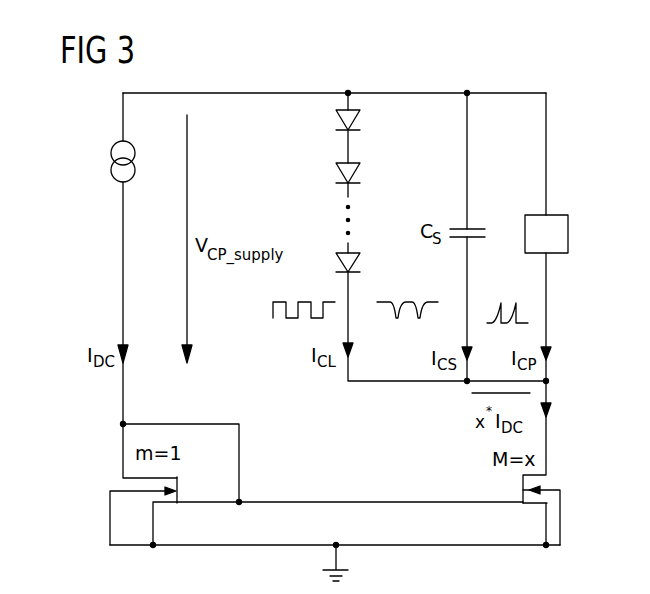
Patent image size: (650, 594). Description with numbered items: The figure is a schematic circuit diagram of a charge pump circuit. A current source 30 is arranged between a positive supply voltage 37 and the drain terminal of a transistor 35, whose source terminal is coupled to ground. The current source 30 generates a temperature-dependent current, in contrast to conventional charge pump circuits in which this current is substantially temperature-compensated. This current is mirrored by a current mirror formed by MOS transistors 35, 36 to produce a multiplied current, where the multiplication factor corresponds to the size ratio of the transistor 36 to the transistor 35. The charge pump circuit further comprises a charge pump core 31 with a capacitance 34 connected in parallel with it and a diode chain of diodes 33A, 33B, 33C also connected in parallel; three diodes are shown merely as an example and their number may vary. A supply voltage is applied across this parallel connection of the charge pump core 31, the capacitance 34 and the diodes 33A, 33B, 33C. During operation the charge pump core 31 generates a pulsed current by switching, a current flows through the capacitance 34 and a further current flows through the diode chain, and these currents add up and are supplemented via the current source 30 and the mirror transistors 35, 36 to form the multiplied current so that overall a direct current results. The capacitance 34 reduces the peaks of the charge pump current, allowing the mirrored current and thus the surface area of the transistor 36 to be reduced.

The current source 30 is at (111, 160).
The charge pump core 31 is at (568, 236).
The diode 33A is at (360, 118).
The diode 33B is at (360, 172).
The diode 33C is at (360, 265).
The capacitance 34 is at (470, 228).
The transistor 35 is at (180, 495).
The transistor 36 is at (520, 490).
The positive supply voltage 37 is at (407, 93).